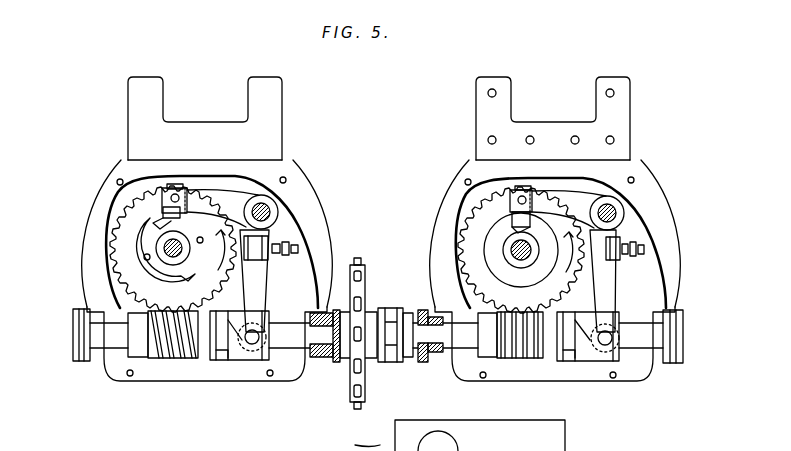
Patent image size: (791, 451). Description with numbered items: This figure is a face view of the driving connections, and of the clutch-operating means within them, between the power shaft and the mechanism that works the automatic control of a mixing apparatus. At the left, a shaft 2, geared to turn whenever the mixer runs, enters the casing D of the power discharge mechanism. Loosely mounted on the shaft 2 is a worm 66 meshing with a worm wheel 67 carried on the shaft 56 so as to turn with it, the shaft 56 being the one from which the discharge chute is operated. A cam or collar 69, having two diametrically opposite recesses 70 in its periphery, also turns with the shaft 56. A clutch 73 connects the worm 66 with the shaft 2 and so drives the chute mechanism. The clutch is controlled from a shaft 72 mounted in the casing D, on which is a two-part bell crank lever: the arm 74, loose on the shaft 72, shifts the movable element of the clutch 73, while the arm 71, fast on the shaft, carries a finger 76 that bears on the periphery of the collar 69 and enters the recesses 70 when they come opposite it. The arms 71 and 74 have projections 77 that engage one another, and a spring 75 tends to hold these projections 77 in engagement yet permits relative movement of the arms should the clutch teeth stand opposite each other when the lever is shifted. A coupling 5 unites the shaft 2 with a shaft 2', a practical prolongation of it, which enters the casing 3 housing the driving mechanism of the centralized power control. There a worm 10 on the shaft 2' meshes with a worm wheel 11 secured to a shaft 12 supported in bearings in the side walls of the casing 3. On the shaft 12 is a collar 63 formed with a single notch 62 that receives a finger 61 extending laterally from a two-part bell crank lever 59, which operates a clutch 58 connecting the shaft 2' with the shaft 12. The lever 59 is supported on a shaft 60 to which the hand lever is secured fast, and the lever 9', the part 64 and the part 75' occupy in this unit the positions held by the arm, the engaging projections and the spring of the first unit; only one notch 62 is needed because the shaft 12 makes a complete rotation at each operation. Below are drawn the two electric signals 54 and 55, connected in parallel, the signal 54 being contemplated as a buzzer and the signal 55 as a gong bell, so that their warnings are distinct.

The casing D is at (105, 197).
The cam or collar 69 is at (147, 267).
The recesses 70 is at (148, 224).
The shaft 56 is at (165, 252).
The finger or projection 76 is at (165, 198).
The bell crank lever arm 71 is at (213, 198).
The shaft 72 is at (266, 210).
The projections 77 is at (264, 238).
The spring 75 is at (325, 231).
The bell crank lever arm 74 is at (258, 292).
The clutch 73 is at (220, 360).
The worm 66 is at (180, 355).
The worm wheel 67 is at (133, 300).
The shaft 2 is at (304, 356).
The coupling 5 is at (388, 360).
The electric signal 54 is at (355, 450).
The electric signal 55 is at (460, 448).
The casing 3 is at (571, 229).
The worm wheel 11 is at (488, 250).
The shaft 12 is at (463, 249).
The finger or projection 61 is at (482, 159).
The notch 62 is at (461, 182).
The collar 63 is at (454, 204).
The lever 9' is at (569, 143).
The shaft 60 is at (634, 177).
The stop block 64 is at (661, 224).
The adjusting screw 75' is at (683, 243).
The bell crank lever 59 is at (649, 291).
The clutch 58 is at (605, 369).
The worm 10 is at (510, 358).
The shaft 2' is at (550, 357).